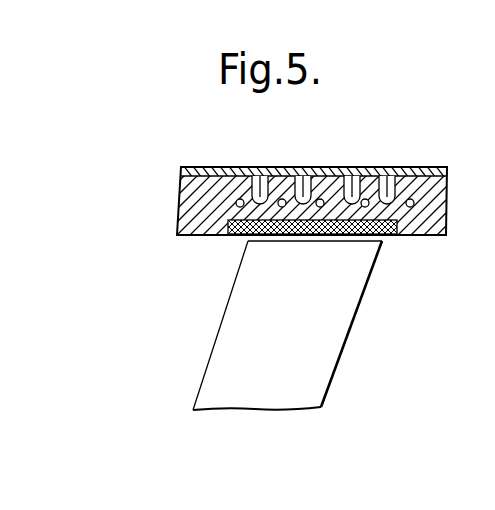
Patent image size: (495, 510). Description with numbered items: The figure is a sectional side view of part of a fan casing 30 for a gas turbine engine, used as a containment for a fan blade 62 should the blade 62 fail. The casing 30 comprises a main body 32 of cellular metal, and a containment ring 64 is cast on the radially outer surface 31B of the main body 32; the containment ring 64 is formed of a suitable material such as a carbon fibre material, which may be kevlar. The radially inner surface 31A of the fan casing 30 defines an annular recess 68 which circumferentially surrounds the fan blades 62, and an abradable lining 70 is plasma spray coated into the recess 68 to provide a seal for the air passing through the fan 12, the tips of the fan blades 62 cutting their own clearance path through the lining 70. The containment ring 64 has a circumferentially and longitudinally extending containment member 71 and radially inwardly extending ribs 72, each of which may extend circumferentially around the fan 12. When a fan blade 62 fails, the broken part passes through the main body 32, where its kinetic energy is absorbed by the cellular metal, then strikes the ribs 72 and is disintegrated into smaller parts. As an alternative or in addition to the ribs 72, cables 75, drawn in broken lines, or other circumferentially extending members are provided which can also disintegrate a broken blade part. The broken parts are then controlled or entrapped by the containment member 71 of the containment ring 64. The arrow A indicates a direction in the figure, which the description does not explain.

The fan 12 is at (200, 422).
The fan casing 30 is at (296, 197).
The radially inner surface 31A is at (428, 236).
The radially outer surface 31B is at (422, 170).
The main body 32 is at (176, 215).
The fan blade 62 is at (200, 386).
The containment ring 64 is at (385, 165).
The annular recess 68 is at (408, 237).
The abradable lining 70 is at (232, 236).
The containment member 71 is at (243, 172).
The ribs 72 is at (300, 180).
The cables 75 is at (237, 199).
The direction of movement A is at (182, 324).